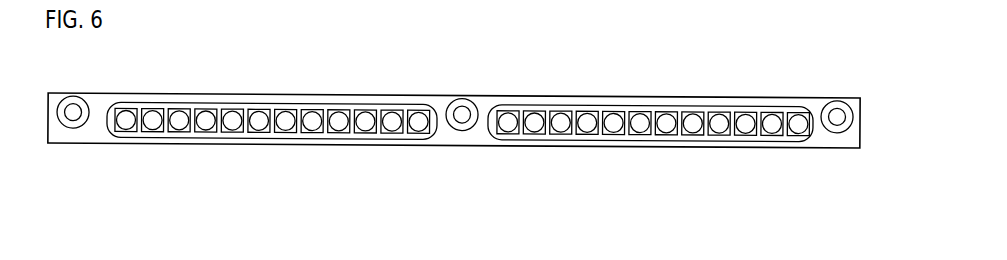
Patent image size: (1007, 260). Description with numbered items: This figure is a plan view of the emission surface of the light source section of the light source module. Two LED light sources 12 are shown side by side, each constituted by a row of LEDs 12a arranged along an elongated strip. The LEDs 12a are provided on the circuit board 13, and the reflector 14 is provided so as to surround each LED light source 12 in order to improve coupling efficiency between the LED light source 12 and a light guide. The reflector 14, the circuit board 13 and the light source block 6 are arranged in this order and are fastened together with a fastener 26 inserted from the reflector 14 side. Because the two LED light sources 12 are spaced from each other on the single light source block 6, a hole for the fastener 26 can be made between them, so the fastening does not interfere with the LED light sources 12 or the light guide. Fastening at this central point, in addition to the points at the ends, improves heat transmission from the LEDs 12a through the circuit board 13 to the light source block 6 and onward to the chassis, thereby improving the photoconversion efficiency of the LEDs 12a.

The light source block 6 is at (709, 101).
The LED light source 12 is at (417, 107).
The LED 12a is at (126, 126).
The circuit board 13 is at (434, 137).
The reflector 14 is at (98, 128).
The fastener 26 is at (462, 99).